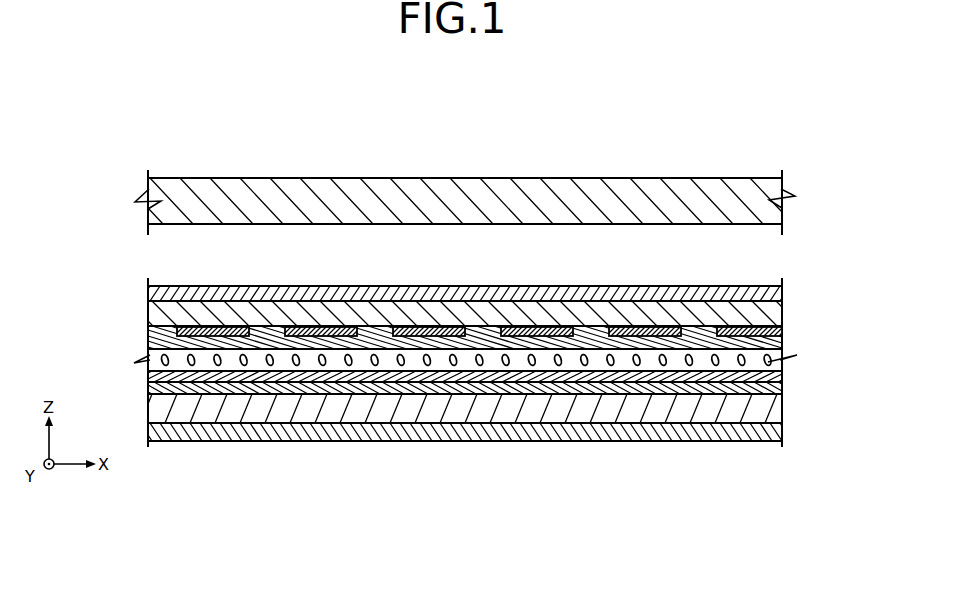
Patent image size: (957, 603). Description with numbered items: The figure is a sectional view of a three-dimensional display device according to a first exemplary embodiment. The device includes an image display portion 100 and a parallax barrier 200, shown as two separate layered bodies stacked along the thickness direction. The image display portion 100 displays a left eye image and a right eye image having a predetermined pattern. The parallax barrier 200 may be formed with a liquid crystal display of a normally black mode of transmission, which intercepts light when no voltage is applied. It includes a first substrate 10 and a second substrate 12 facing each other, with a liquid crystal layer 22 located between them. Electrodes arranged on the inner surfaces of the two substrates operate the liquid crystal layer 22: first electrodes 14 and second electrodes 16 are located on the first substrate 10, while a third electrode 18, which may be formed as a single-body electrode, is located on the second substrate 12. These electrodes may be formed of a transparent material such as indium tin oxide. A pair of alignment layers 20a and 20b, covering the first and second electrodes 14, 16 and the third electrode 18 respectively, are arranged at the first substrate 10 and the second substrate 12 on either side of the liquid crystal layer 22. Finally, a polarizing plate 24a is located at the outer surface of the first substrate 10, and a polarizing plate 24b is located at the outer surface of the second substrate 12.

The image display portion 100 is at (112, 171).
The parallax barrier 200 is at (112, 273).
The first substrate 10 is at (782, 312).
The second substrate 12 is at (782, 410).
The first electrodes 14 is at (165, 328).
The second electrodes 16 is at (270, 328).
The third electrode 18 is at (782, 391).
The alignment layer 20a is at (782, 339).
The alignment layer 20b is at (784, 372).
The liquid crystal layer 22 is at (784, 356).
The polarizing plate 24a is at (782, 291).
The polarizing plate 24b is at (782, 432).